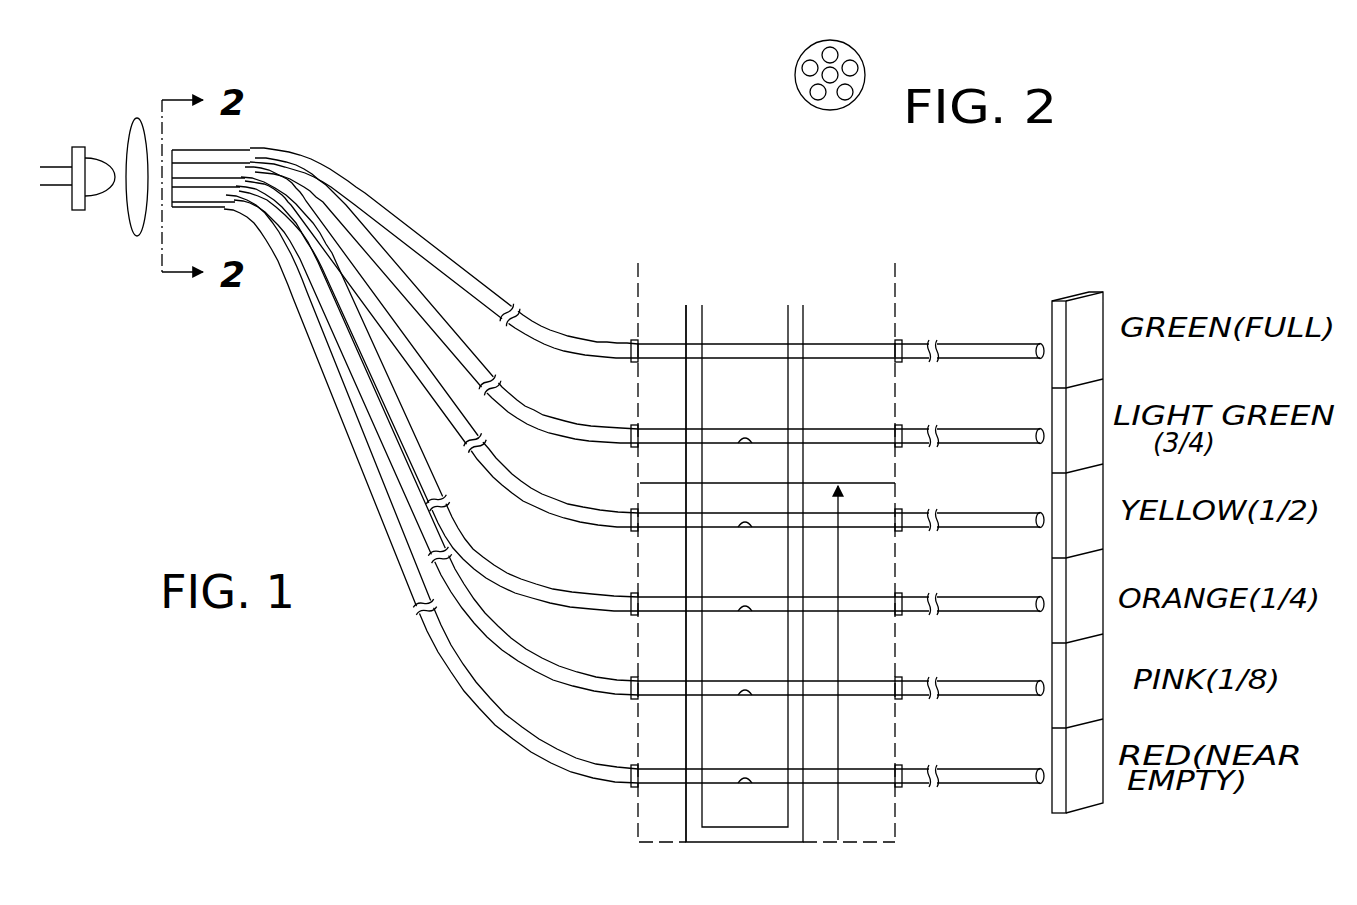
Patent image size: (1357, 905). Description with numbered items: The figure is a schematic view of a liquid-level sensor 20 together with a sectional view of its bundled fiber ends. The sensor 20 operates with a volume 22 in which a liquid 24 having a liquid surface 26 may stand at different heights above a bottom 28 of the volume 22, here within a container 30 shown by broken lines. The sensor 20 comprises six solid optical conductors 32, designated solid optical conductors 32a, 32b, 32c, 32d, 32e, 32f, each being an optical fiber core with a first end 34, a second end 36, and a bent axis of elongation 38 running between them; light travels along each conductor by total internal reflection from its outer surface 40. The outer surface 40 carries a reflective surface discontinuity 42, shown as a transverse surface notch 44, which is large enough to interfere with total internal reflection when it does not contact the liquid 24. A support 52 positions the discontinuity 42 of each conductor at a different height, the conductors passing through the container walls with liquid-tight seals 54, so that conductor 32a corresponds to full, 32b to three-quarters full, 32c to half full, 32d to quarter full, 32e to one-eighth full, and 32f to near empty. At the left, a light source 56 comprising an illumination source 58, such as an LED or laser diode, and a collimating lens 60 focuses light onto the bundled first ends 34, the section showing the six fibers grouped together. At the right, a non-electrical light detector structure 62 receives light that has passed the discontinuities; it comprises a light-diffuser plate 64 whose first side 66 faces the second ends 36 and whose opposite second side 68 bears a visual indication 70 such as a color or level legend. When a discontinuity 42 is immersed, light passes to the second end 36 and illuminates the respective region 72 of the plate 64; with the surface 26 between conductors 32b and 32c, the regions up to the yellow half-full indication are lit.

In FIG. 1, the liquid-level sensor 20 is at (514, 214).
In FIG. 1, the volume 22 is at (875, 412).
In FIG. 1, the liquid 24 is at (760, 577).
In FIG. 1, the liquid surface 26 is at (654, 483).
In FIG. 1, the bottom 28 is at (894, 838).
In FIG. 1, the container 30 is at (896, 557).
In FIG. 1, the solid optical conductors 32 is at (338, 474).
In FIG. 2, the solid optical conductors 32 is at (870, 60).
In FIG. 1, the solid optical conductor 32a is at (567, 335).
In FIG. 1, the solid optical conductor 32b is at (558, 417).
In FIG. 1, the solid optical conductor 32c is at (553, 499).
In FIG. 1, the solid optical conductor 32d is at (553, 583).
In FIG. 1, the solid optical conductor 32e is at (553, 664).
In FIG. 1, the solid optical conductor 32f is at (541, 741).
In FIG. 1, the first end 34 is at (178, 150).
In FIG. 2, the first end 34 is at (818, 100).
In FIG. 1, the second end 36 is at (1043, 348).
In FIG. 1, the axis of elongation 38 is at (1010, 345).
In FIG. 1, the outer surface 40 is at (957, 342).
In FIG. 1, the reflective surface discontinuity 42 is at (743, 366).
In FIG. 1, the transverse surface notch 44 is at (740, 352).
In FIG. 1, the support 52 is at (686, 745).
In FIG. 1, the liquid-tight seals 54 is at (631, 338).
In FIG. 1, the light source 56 is at (99, 98).
In FIG. 1, the illumination source 58 is at (97, 198).
In FIG. 1, the collimating lens 60 is at (128, 227).
In FIG. 1, the light detector structure 62 is at (1100, 290).
In FIG. 1, the light-diffuser plate 64 is at (1053, 400).
In FIG. 1, the first side 66 is at (1053, 458).
In FIG. 1, the second side 68 is at (1100, 488).
In FIG. 1, the visual indication 70 is at (1095, 521).
In FIG. 1, the region 72 is at (1056, 662).